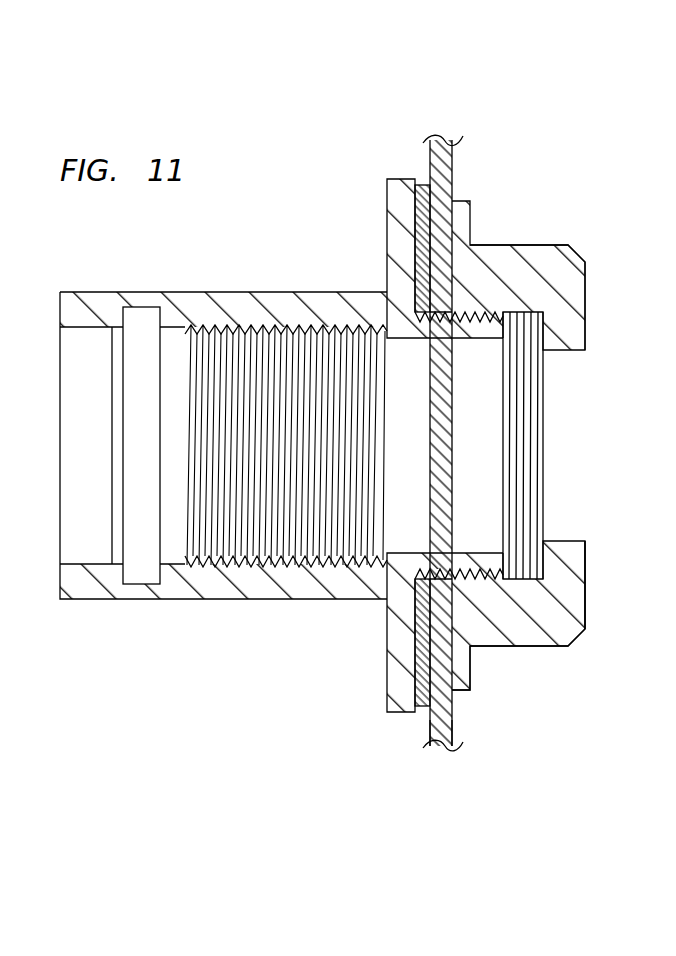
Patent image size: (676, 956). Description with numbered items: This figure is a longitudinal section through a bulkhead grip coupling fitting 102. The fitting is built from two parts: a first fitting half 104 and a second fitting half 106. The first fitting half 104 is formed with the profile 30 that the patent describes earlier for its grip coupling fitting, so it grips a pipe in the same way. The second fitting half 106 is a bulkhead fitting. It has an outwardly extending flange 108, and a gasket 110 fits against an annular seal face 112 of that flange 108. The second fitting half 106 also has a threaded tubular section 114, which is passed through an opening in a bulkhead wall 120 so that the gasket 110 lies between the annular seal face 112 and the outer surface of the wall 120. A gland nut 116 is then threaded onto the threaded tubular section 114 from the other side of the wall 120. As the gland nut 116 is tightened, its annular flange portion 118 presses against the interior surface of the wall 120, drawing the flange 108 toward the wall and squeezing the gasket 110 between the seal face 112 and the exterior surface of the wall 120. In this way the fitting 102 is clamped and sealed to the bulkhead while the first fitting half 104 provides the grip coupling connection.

The profile 30 is at (118, 563).
The bulkhead grip coupling fitting 102 is at (305, 284).
The first fitting half 104 is at (239, 610).
The second fitting half 106 is at (503, 239).
The outwardly extending flange 108 is at (400, 197).
The gasket 110 is at (428, 188).
The annular seal face 112 is at (420, 228).
The threaded tubular section 114 is at (489, 562).
The gland nut 116 is at (578, 583).
The annular flange portion 118 is at (463, 663).
The bulkhead wall 120 is at (443, 747).